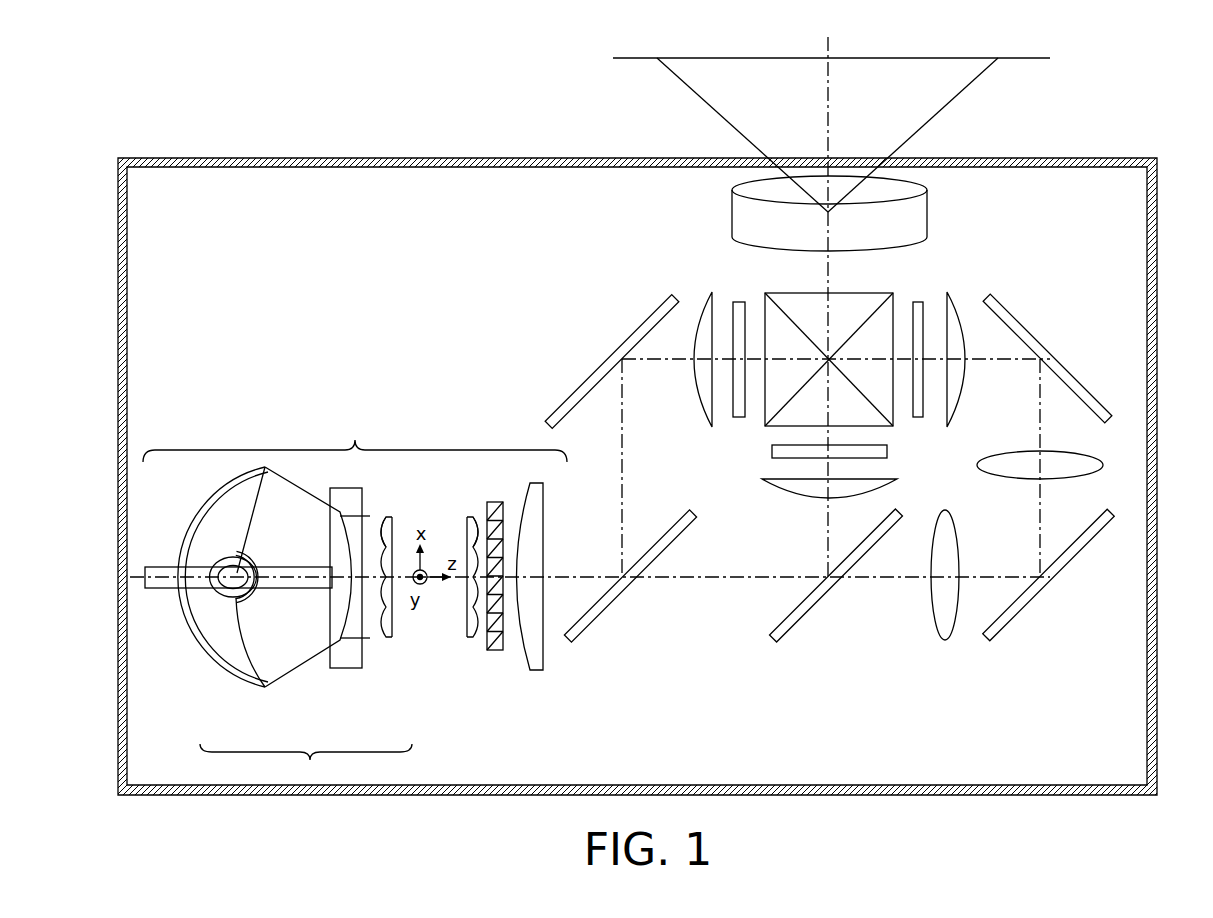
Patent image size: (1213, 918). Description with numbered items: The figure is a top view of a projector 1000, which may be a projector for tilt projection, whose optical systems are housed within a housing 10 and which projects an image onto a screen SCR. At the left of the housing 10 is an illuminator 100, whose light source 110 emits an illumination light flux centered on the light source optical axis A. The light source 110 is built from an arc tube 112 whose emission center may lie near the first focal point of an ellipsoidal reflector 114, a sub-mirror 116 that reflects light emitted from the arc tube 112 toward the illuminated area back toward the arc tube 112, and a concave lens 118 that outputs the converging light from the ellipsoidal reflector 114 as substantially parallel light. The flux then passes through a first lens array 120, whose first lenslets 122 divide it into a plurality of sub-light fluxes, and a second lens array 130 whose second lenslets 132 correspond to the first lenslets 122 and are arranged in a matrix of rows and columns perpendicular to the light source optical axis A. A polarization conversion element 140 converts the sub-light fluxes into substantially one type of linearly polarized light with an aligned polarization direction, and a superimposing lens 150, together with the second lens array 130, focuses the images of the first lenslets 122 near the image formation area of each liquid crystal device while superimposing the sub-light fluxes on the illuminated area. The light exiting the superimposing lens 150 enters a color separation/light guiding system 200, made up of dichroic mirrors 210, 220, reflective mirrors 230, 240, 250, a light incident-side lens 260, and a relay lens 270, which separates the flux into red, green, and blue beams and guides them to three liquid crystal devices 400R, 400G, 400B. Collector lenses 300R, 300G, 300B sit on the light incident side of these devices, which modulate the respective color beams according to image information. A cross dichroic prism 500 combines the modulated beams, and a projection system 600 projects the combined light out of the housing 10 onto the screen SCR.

The projector 1000 is at (392, 81).
The housing 10 is at (277, 158).
The screen SCR is at (1030, 60).
The illuminator 100 is at (355, 437).
The light source 110 is at (278, 626).
The arc tube 112 is at (245, 596).
The ellipsoidal reflector 114 is at (228, 673).
The sub-mirror 116 is at (262, 600).
The concave lens 118 is at (345, 672).
The light source optical axis A is at (138, 580).
The first lens array 120 is at (395, 640).
The first lenslets 122 is at (388, 520).
The second lens array 130 is at (472, 640).
The second lenslets 132 is at (470, 520).
The polarization conversion element 140 is at (497, 502).
The superimposing lens 150 is at (540, 672).
The color separation/light guiding system 200 is at (838, 700).
The dichroic mirror 210 is at (596, 620).
The dichroic mirror 220 is at (812, 610).
The reflective mirror 230 is at (594, 370).
The reflective mirror 240 is at (1013, 618).
The reflective mirror 250 is at (1062, 360).
The light incident-side lens 260 is at (945, 640).
The relay lens 270 is at (1103, 466).
The collector lens 300R is at (700, 292).
The collector lens 300G is at (762, 481).
The collector lens 300B is at (955, 290).
The liquid crystal device 400R is at (738, 295).
The liquid crystal device 400G is at (770, 451).
The liquid crystal device 400B is at (918, 295).
The cross dichroic prism 500 is at (775, 293).
The projection system 600 is at (930, 212).